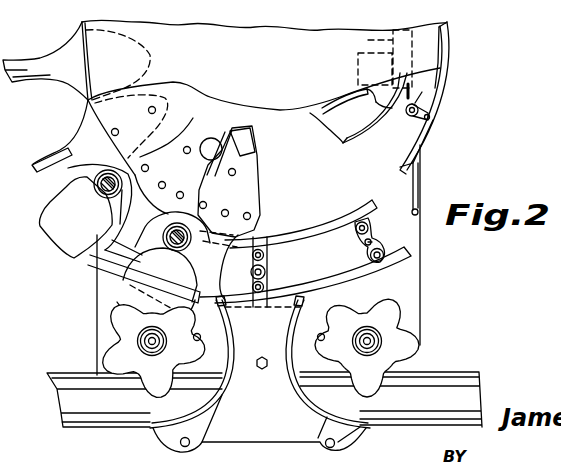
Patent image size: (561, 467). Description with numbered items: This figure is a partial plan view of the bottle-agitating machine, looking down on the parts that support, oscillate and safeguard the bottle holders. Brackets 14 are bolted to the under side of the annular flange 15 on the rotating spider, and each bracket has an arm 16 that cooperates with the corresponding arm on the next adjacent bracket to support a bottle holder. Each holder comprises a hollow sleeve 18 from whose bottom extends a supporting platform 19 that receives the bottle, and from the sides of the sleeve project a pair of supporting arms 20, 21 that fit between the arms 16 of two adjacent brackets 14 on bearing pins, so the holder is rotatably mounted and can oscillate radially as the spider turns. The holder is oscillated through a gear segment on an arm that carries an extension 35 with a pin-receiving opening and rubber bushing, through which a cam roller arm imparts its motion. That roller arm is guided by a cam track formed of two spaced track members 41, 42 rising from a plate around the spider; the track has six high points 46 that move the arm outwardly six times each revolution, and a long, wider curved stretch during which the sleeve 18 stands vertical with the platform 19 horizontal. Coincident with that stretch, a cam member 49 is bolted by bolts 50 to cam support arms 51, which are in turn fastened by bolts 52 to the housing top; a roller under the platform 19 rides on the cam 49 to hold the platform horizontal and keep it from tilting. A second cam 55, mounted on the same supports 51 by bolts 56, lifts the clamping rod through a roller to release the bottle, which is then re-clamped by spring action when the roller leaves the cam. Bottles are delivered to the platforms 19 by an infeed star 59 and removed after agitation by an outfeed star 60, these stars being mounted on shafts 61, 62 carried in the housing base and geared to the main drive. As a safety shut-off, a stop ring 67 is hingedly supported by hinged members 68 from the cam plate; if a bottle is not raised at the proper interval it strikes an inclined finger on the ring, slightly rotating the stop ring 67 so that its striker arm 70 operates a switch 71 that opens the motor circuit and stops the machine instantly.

The bracket 14 is at (266, 186).
The annular flange 15 is at (224, 65).
The bracket arm 16 is at (97, 250).
The hollow sleeve 18 is at (177, 230).
The supporting platform 19 is at (52, 228).
The supporting arm 20 is at (78, 178).
The supporting arm 21 is at (102, 225).
The extension 35 is at (245, 143).
The track member 41 is at (338, 98).
The track member 42 is at (380, 127).
The high point 46 is at (366, 98).
The cam member 49 is at (360, 275).
The bolt 50 is at (383, 251).
The cam support arm 51 is at (386, 232).
The bolt 52 is at (365, 242).
The second cam 55 is at (335, 225).
The bolt 56 is at (368, 223).
The infeed star 59 is at (112, 350).
The outfeed star 60 is at (395, 317).
The shaft 61 is at (160, 347).
The shaft 62 is at (378, 345).
The stop ring 67 is at (453, 65).
The hinged member 68 is at (422, 147).
The striker arm 70 is at (450, 30).
The switch 71 is at (377, 59).